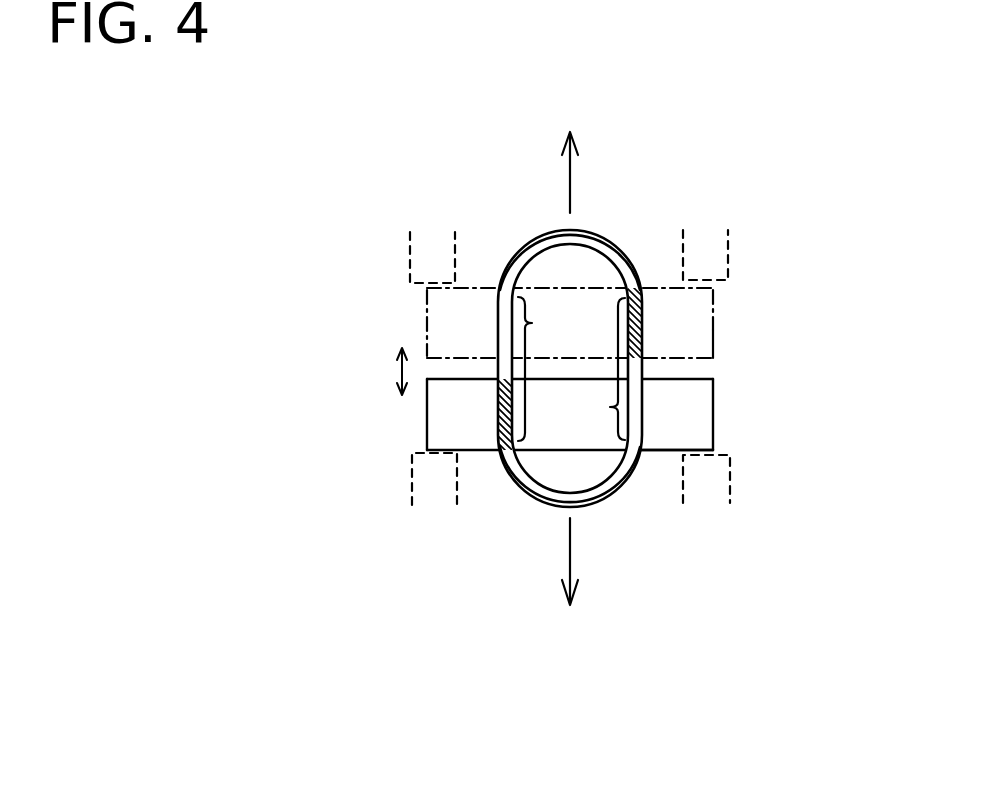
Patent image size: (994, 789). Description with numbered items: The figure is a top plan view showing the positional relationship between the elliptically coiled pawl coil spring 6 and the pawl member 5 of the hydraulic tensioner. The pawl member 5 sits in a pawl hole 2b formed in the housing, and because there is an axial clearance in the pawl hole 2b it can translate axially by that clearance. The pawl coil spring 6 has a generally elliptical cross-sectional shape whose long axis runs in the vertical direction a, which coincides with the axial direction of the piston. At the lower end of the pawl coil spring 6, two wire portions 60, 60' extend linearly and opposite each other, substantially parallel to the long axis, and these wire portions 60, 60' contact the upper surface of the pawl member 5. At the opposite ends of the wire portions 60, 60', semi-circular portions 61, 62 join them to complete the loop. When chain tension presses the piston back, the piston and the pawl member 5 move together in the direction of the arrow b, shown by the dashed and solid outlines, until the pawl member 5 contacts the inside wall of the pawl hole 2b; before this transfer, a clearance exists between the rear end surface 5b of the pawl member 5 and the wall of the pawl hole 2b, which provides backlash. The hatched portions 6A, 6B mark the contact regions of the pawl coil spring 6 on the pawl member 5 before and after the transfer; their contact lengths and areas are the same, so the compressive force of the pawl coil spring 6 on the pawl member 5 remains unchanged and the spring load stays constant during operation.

The pawl member 5 is at (713, 345).
The rear end surface 5b is at (697, 453).
The pawl hole 2b is at (415, 453).
The pawl coil spring 6 is at (597, 228).
The semi-circular portion 62 is at (528, 246).
The semi-circular portion 61 is at (550, 497).
The hatched portion 6A is at (500, 422).
The hatched portion 6B is at (642, 325).
The wire portion 60 is at (554, 369).
The wire portion 60' is at (591, 369).
The vertical direction of the long axis a is at (570, 178).
The direction of arrow b is at (395, 372).